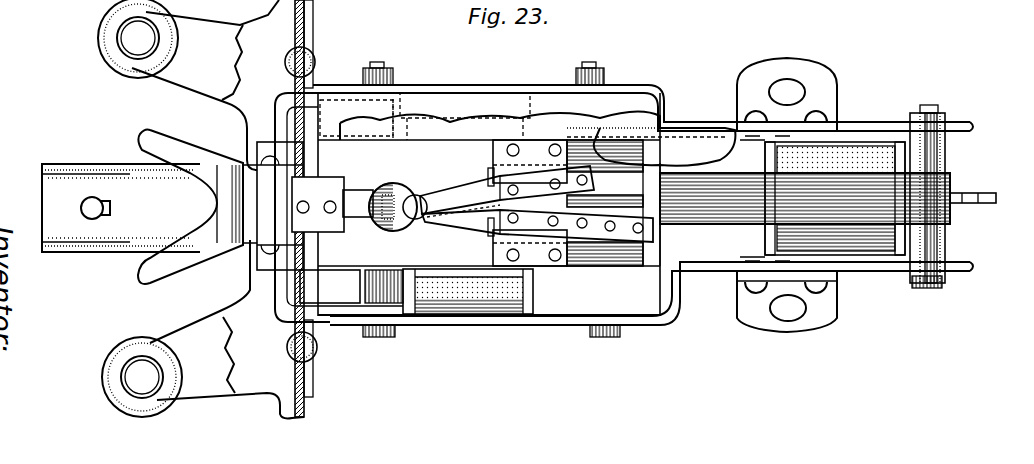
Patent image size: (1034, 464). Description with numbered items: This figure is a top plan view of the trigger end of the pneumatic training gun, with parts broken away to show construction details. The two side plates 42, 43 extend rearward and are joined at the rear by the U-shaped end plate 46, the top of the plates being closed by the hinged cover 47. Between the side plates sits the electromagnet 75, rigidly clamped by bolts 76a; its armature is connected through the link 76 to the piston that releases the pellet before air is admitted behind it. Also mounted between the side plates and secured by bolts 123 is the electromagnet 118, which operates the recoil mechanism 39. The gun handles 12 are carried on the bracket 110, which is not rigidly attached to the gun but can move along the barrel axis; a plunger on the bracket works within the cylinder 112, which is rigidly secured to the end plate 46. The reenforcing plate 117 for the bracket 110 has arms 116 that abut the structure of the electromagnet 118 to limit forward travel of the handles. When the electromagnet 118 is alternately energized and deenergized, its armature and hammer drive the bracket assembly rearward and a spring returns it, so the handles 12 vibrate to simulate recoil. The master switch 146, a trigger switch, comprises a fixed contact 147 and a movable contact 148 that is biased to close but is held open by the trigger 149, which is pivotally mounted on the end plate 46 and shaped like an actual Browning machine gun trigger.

The gun handles 12 is at (100, 62).
The recoil mechanism 39 is at (463, 326).
The side plate 42 is at (493, 87).
The side plate 43 is at (556, 324).
The U-shaped end plate 46 is at (338, 310).
The hinged cover 47 is at (688, 126).
The electromagnet 75 is at (850, 165).
The link 76 is at (970, 194).
The bolts 76a is at (930, 284).
The bracket 110 is at (306, 39).
The cylinder 112 is at (101, 253).
The arms 116 is at (325, 108).
The reenforcing plate 117 is at (310, 22).
The electromagnet 118 is at (500, 312).
The bolts 123 is at (388, 338).
The master switch 146 is at (421, 197).
The fixed contact 147 is at (452, 221).
The movable contact 148 is at (395, 200).
The trigger 149 is at (200, 262).